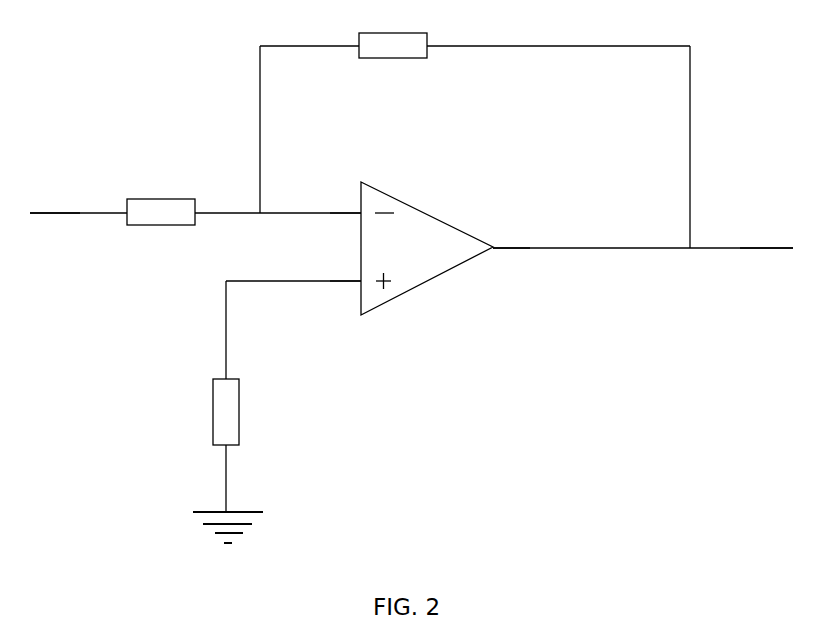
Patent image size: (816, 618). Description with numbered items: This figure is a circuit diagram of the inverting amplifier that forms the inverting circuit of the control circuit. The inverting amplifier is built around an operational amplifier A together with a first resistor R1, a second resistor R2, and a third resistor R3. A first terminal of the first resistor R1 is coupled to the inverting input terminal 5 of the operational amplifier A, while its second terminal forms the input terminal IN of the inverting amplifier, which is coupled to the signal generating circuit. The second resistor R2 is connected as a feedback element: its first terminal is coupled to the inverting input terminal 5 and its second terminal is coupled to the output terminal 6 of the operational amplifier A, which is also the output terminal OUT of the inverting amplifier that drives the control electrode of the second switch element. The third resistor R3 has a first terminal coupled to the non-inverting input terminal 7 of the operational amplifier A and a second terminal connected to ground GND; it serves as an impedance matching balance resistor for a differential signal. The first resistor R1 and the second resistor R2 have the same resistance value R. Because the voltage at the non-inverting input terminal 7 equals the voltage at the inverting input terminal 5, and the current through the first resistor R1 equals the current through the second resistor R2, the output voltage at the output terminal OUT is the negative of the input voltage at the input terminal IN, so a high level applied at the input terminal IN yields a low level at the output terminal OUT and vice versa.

The first resistor R1 is at (161, 198).
The second resistor R2 is at (393, 62).
The third resistor R3 is at (246, 412).
The operational amplifier A is at (427, 248).
The inverting input terminal 5 is at (345, 199).
The output terminal 6 is at (511, 234).
The non-inverting input terminal 7 is at (345, 294).
The input terminal IN is at (55, 199).
The output terminal OUT is at (770, 234).
The ground GND is at (228, 548).